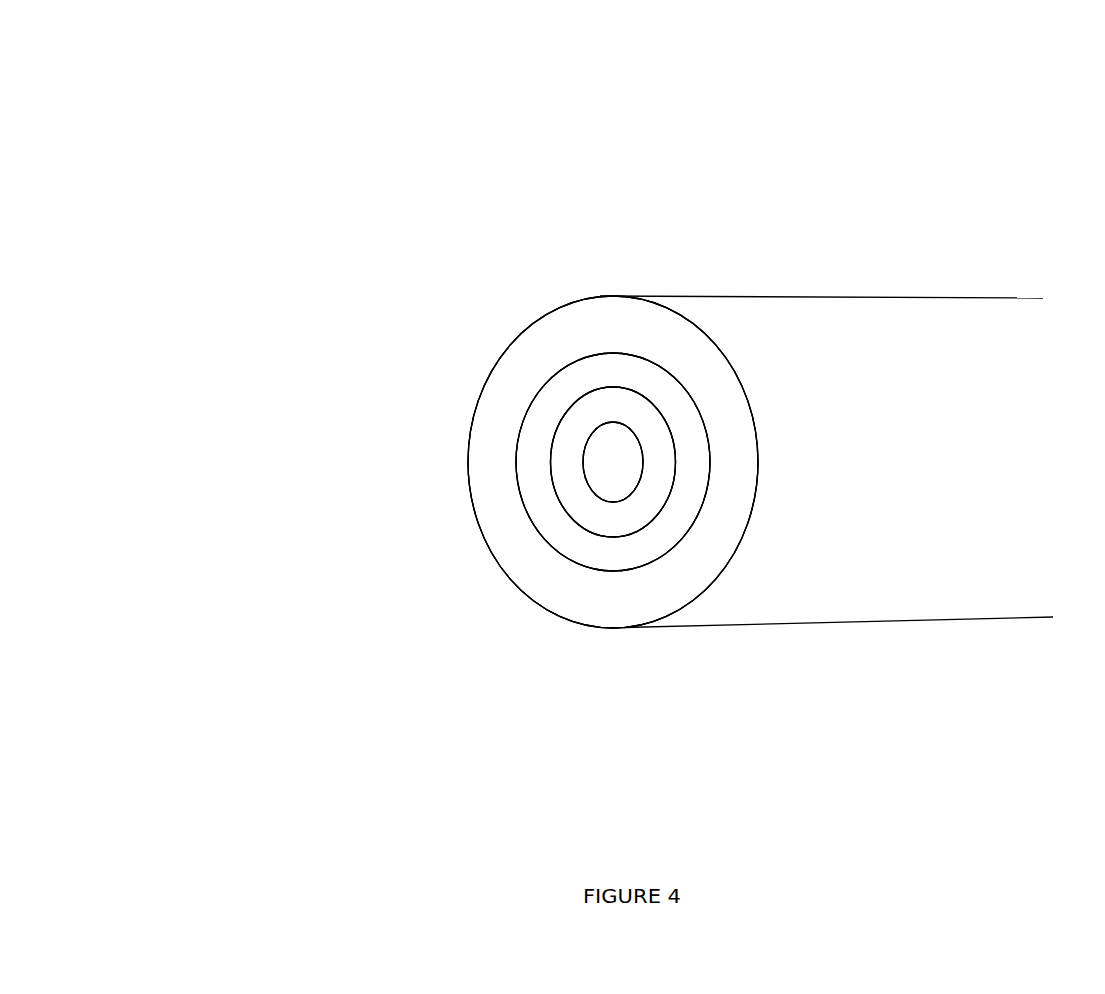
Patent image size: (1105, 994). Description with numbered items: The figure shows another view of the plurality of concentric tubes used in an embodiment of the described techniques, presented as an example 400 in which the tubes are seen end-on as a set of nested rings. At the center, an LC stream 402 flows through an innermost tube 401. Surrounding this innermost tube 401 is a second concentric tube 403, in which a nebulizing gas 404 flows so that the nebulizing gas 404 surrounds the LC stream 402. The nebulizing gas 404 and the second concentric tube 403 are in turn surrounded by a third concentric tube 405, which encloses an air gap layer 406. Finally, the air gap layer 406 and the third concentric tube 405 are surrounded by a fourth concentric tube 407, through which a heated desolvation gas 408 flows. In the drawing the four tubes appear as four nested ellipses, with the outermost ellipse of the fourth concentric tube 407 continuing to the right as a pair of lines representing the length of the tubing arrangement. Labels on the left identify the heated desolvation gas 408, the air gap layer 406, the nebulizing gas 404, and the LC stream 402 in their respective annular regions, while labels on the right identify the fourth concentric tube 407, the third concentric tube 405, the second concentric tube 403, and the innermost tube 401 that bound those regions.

The example 400 is at (148, 78).
The innermost tube 401 is at (639, 485).
The LC stream 402 is at (607, 467).
The second concentric tube 403 is at (675, 463).
The nebulizing gas 404 is at (572, 433).
The third concentric tube 405 is at (695, 416).
The air gap layer 406 is at (550, 409).
The fourth concentric tube 407 is at (730, 370).
The heated desolvation gas 408 is at (538, 352).